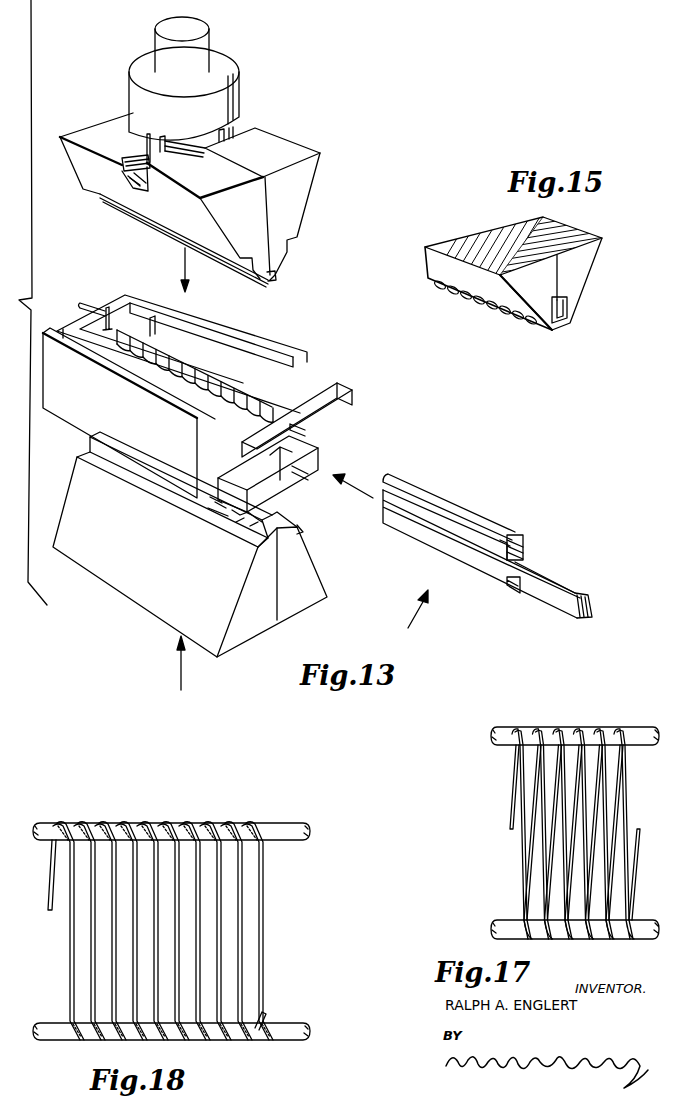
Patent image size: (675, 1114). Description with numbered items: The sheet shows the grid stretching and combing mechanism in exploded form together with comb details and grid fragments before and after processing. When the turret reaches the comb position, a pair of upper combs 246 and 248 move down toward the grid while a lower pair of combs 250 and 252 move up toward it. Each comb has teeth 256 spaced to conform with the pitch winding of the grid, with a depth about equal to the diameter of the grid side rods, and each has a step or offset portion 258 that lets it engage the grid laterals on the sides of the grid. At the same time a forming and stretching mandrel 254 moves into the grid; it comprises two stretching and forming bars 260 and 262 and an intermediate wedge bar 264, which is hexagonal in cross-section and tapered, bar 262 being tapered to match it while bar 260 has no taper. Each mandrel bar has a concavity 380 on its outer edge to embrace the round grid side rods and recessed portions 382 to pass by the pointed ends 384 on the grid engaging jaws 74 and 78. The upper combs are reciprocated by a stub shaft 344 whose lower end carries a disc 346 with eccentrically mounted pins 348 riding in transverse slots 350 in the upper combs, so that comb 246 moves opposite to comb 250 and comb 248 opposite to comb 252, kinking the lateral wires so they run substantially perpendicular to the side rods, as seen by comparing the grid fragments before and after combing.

In FIG. 13, the stub shaft 344 is at (210, 38).
In FIG. 13, the disc 346 is at (240, 90).
In FIG. 13, the upper comb 248 is at (277, 147).
In FIG. 15, the upper comb 248 is at (582, 267).
In FIG. 13, the eccentrically mounted pins 348 is at (147, 143).
In FIG. 13, the transverse slots 350 is at (142, 172).
In FIG. 13, the upper comb 246 is at (160, 213).
In FIG. 15, the upper comb 246 is at (543, 325).
In FIG. 13, the pointed ends 384 is at (290, 413).
In FIG. 13, the jaw 78 is at (338, 397).
In FIG. 13, the grid engaging jaw 74 is at (247, 448).
In FIG. 13, the stretching and forming bar 262 is at (388, 493).
In FIG. 13, the stretching and forming bar 260 is at (393, 525).
In FIG. 13, the concavity 380 is at (518, 536).
In FIG. 13, the wedge bar 264 is at (573, 590).
In FIG. 13, the recessed portions 382 is at (502, 543).
In FIG. 13, the forming and stretching mandrel 254 is at (407, 619).
In FIG. 13, the lower comb 252 is at (297, 603).
In FIG. 13, the lower comb 250 is at (143, 597).
In FIG. 15, the teeth 256 is at (497, 318).
In FIG. 15, the step or offset portion 258 is at (560, 326).